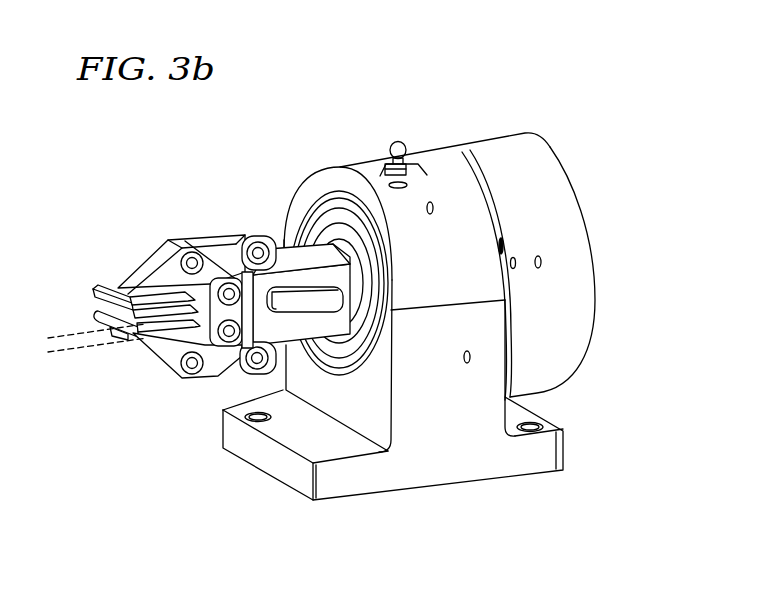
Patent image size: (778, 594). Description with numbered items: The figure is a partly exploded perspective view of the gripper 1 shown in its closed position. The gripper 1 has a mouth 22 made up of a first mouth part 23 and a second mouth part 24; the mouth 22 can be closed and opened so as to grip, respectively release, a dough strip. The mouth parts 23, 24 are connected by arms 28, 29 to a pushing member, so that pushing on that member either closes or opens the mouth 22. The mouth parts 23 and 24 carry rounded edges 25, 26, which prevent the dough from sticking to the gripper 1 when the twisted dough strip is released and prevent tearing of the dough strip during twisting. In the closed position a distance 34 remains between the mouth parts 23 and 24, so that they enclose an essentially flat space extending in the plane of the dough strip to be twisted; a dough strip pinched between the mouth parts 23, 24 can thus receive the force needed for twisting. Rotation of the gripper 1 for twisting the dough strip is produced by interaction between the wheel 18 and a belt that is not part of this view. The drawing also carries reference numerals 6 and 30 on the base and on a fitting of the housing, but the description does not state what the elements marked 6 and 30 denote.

The gripper 1 is at (352, 326).
The base plate 6 is at (473, 465).
The wheel 18 is at (548, 177).
The mouth 22 is at (149, 286).
The first mouth part 23 is at (103, 287).
The second mouth part 24 is at (92, 317).
The rounded edge 25 is at (136, 341).
The rounded edge 26 is at (143, 343).
The arm 28 is at (224, 247).
The arm 29 is at (227, 363).
The grease nipple 30 is at (387, 160).
The distance 34 is at (53, 310).